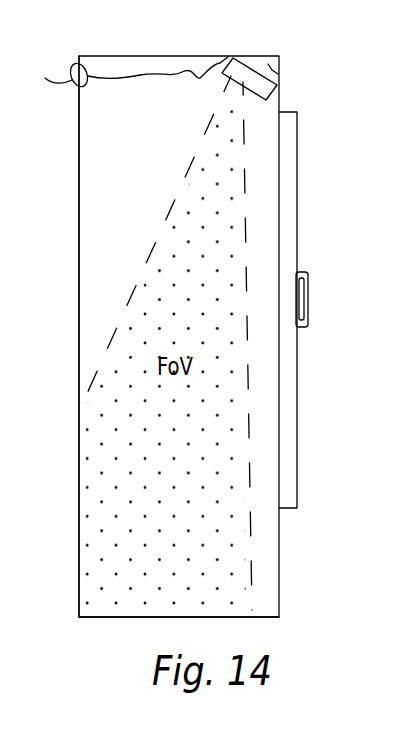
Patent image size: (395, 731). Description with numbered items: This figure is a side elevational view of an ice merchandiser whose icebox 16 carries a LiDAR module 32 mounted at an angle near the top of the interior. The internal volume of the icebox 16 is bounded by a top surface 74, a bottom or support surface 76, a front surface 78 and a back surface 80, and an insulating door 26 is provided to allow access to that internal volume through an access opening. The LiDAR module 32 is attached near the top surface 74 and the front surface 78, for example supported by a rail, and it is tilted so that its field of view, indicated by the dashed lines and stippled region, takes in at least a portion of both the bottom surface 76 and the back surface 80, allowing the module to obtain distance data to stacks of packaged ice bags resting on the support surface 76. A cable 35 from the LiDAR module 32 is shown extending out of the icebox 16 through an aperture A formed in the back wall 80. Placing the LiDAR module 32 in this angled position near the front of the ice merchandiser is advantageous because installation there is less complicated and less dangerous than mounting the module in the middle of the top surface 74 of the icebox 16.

The icebox 16 is at (153, 158).
The insulating door 26 is at (293, 189).
The LiDAR module 32 is at (242, 66).
The cable 35 is at (72, 80).
The top surface 74 is at (142, 74).
The bottom surface 76 is at (123, 620).
The front surface 78 is at (272, 70).
The back surface 80 is at (80, 233).
The aperture A is at (81, 86).